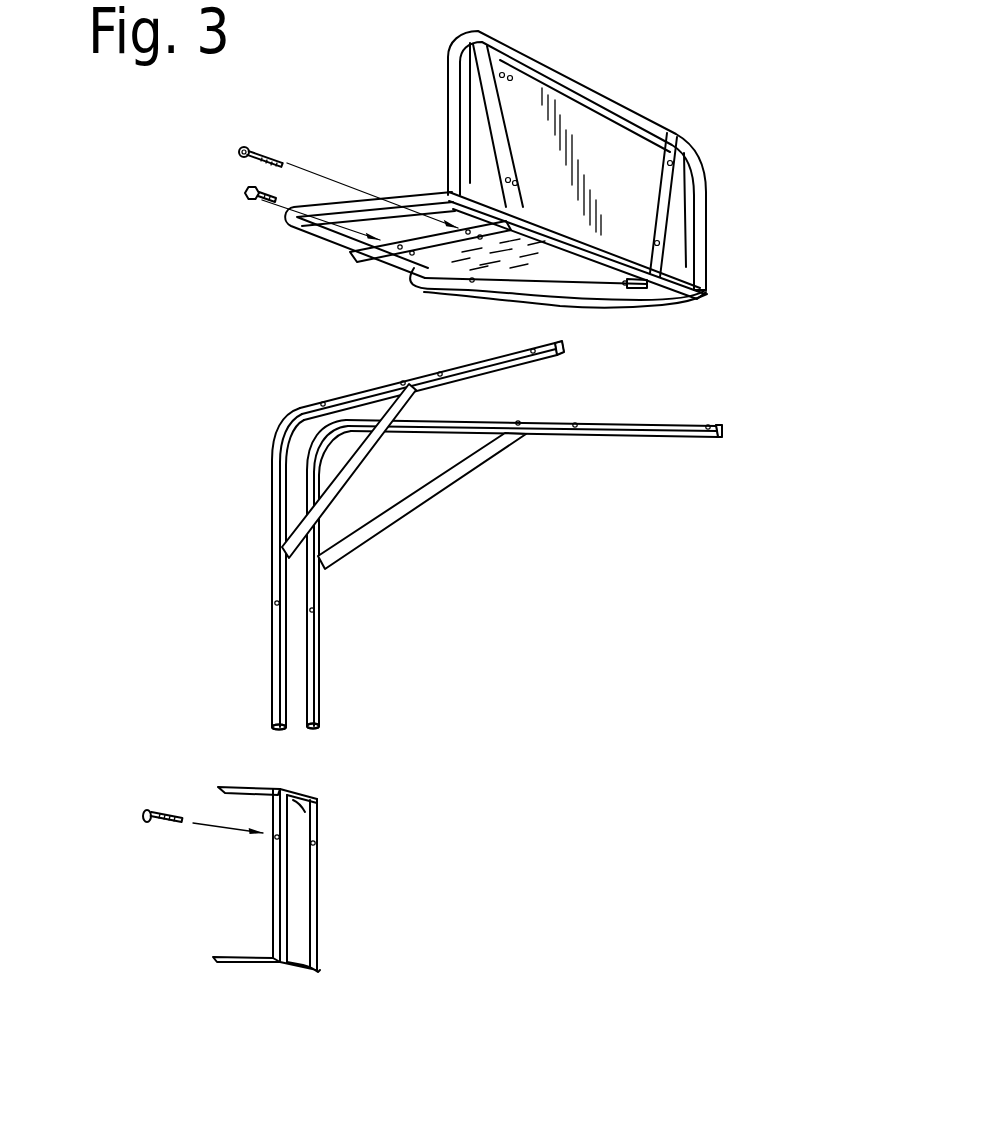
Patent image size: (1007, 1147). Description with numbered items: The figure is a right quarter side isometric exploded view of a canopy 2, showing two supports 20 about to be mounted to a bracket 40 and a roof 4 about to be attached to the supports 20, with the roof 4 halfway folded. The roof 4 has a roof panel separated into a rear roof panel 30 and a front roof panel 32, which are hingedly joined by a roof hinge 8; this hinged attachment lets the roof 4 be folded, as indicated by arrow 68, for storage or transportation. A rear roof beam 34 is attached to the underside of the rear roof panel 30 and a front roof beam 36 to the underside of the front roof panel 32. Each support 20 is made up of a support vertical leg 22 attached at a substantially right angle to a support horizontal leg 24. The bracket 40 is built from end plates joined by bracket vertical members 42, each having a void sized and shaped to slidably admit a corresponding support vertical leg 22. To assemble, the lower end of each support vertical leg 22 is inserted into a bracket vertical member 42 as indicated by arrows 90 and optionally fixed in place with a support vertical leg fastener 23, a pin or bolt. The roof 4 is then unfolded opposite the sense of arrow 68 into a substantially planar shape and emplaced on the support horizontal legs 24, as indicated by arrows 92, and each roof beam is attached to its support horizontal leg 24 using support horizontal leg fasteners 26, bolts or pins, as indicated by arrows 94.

The canopy 2 is at (148, 380).
The roof 4 is at (567, 159).
The roof hinge 8 is at (462, 196).
The support 20 is at (452, 535).
The support vertical leg 22 is at (318, 692).
The support vertical leg fastener 23 is at (143, 812).
The support horizontal leg 24 is at (490, 368).
The support horizontal leg fastener 26 is at (232, 192).
The rear roof panel 30 is at (417, 265).
The front roof panel 32 is at (606, 145).
The rear roof beam 34 is at (358, 253).
The front roof beam 36 is at (485, 98).
The bracket 40 is at (312, 879).
The bracket vertical member 42 is at (292, 883).
The arrow 68 is at (403, 190).
The arrows 90 is at (281, 765).
The arrows 92 is at (312, 362).
The arrows 94 is at (321, 182).